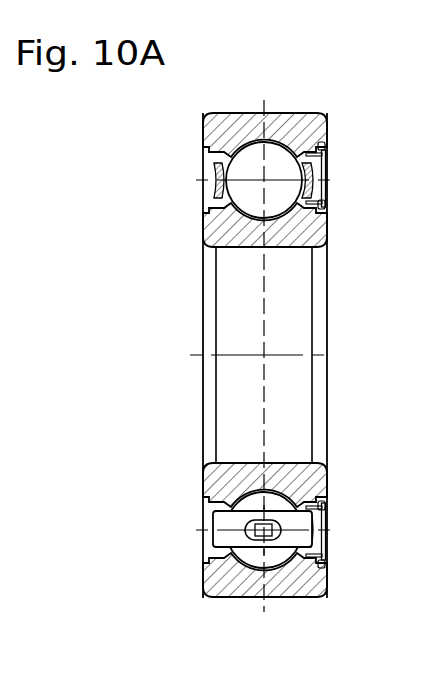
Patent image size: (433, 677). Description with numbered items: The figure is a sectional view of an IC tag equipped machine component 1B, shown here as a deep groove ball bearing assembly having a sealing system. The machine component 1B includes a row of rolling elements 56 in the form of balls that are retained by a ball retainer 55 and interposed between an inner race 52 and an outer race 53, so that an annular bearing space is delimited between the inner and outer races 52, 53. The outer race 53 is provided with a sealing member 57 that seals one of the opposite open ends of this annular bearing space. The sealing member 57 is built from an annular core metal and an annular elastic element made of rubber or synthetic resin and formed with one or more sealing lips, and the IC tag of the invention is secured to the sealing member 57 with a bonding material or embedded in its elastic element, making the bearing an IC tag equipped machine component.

The machine component 1B is at (182, 431).
The inner race 52 is at (243, 245).
The outer race 53 is at (245, 122).
The ball retainer 55 is at (210, 183).
The rolling elements 56 is at (287, 167).
The sealing member 57 is at (327, 202).